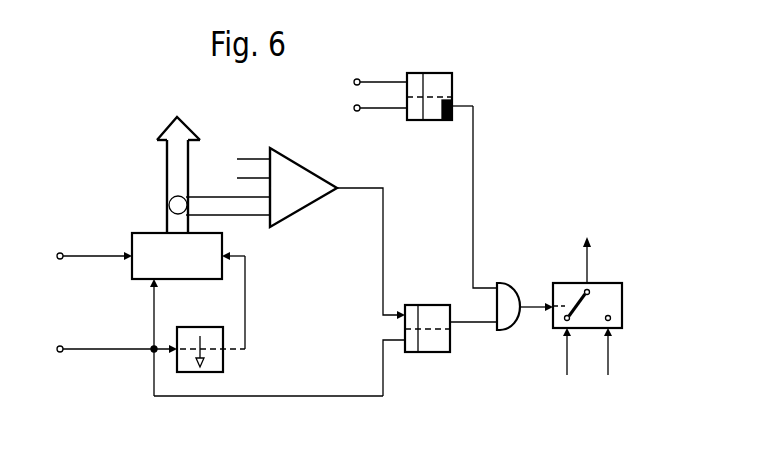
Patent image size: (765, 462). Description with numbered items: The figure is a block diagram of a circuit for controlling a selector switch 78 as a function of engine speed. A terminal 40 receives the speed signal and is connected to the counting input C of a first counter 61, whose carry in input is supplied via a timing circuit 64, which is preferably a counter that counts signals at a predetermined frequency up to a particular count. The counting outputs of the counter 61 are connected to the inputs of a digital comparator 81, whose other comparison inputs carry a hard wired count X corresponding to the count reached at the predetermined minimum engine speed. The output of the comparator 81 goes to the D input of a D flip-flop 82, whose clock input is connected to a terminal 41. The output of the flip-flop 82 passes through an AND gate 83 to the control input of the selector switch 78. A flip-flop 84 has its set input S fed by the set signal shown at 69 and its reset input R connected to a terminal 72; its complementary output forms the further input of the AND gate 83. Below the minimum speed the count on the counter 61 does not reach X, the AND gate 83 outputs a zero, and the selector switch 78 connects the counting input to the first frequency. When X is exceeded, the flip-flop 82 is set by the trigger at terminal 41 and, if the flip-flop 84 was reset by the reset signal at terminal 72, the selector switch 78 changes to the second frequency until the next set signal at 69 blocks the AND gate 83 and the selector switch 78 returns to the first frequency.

The terminal 40 is at (62, 253).
The terminal 41 is at (62, 346).
The first counter 61 is at (152, 242).
The timing circuit 64 is at (207, 340).
The signal U69 69 is at (354, 81).
The terminal 72 is at (354, 107).
The selector switch 78 is at (603, 296).
The digital comparator 81 is at (297, 182).
The D flip-flop 82 is at (430, 312).
The AND gate 83 is at (505, 296).
The flip-flop 84 is at (446, 86).